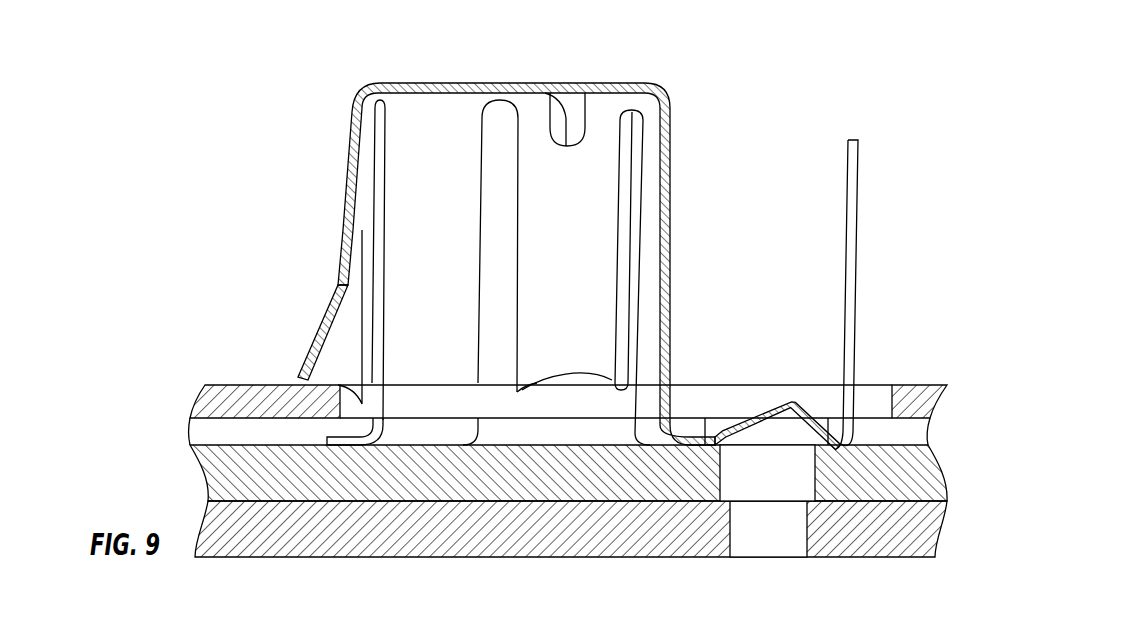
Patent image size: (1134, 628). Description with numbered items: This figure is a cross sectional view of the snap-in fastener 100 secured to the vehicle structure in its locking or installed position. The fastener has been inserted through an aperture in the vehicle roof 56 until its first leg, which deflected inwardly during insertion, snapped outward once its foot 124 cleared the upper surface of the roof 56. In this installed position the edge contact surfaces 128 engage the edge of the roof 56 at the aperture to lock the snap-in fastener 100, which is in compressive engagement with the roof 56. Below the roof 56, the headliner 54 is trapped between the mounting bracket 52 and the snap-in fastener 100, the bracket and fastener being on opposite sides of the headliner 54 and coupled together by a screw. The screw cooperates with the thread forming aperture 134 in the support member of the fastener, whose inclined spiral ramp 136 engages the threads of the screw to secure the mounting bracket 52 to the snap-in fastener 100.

The snap-in fastener 100 is at (696, 102).
The foot 124 is at (308, 362).
The edge contact surfaces 128 is at (333, 377).
The aperture 134 is at (755, 415).
The ramp 136 is at (808, 420).
The vehicle roof 56 is at (917, 392).
The headliner 54 is at (930, 470).
The mounting bracket 52 is at (938, 526).